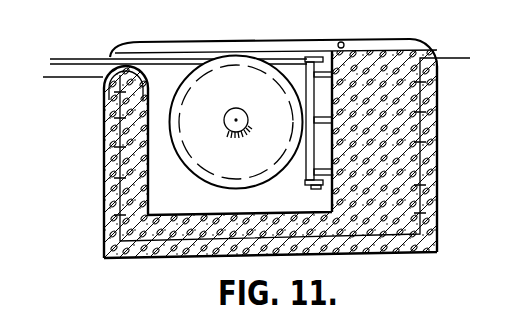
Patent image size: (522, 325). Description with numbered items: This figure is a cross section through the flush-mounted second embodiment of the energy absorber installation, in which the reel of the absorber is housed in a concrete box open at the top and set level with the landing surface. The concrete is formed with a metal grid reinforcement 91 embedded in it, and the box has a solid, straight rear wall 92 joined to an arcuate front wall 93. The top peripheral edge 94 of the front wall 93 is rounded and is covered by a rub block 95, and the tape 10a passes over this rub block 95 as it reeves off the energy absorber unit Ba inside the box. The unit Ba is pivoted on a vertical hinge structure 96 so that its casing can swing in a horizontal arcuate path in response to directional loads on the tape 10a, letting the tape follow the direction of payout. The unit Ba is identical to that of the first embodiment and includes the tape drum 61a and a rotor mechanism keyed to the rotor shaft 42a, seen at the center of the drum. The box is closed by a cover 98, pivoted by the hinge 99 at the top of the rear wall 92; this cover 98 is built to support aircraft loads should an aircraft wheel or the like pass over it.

The tape 10a is at (77, 58).
The top peripheral edge 94 is at (117, 72).
The rub block 95 is at (103, 86).
The arcuate front wall 93 is at (110, 140).
The cover 98 is at (209, 50).
The energy absorber unit Ba is at (246, 83).
The vertical hinge structure 96 is at (318, 58).
The hinge 99 is at (349, 41).
The rear wall 92 is at (408, 107).
The metal grid reinforcement 91 is at (433, 158).
The tape drum 61a is at (205, 147).
The rotor shaft 42a is at (238, 138).